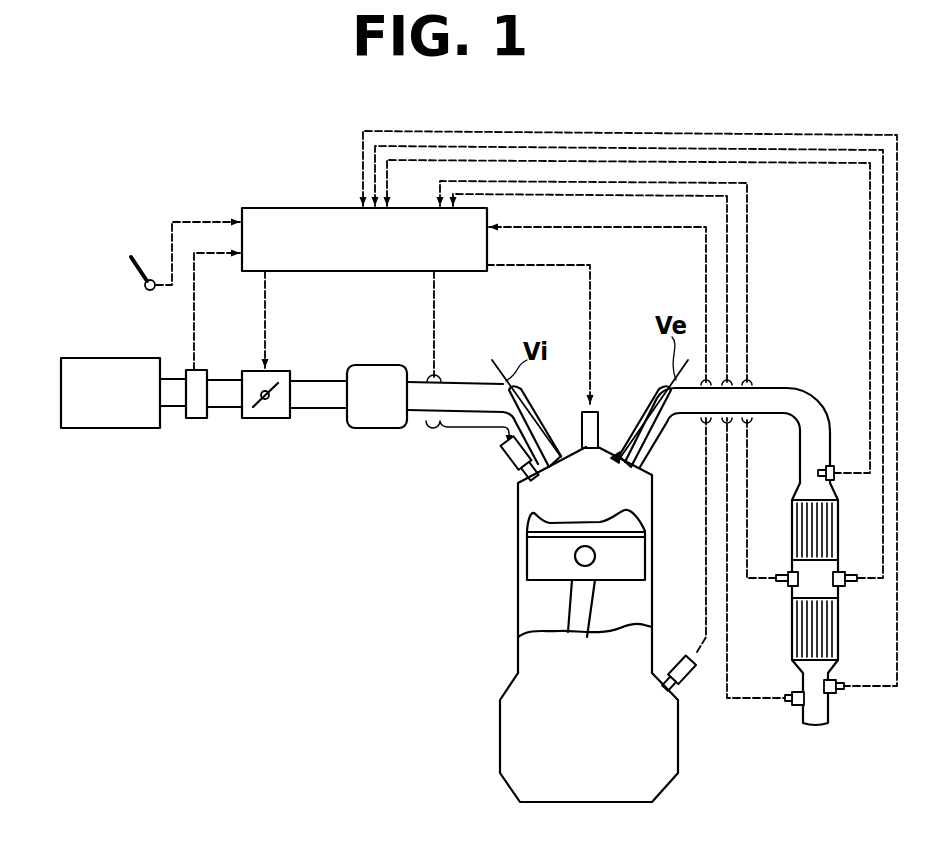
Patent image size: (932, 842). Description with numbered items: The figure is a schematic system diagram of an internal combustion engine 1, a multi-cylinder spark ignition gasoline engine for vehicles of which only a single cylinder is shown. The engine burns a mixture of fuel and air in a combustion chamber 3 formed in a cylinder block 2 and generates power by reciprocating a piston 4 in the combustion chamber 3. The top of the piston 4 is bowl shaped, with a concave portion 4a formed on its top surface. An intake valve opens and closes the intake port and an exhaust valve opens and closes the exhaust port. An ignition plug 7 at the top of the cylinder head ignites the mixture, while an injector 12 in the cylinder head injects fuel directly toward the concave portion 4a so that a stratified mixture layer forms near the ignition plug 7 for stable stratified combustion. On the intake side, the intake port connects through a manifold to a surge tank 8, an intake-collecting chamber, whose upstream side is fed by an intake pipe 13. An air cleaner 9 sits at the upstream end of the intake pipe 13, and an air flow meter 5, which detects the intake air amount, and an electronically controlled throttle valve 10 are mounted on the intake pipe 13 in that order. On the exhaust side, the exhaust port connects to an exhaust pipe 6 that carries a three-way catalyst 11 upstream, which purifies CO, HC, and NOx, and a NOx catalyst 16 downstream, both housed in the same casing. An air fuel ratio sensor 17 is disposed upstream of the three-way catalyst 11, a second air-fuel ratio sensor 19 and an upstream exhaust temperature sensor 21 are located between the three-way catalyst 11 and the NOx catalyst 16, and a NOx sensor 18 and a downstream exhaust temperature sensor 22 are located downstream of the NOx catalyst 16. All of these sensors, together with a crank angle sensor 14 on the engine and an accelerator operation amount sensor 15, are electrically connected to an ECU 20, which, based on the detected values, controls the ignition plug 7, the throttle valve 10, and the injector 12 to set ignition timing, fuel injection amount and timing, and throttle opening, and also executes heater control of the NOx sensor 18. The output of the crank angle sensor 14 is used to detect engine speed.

The internal combustion engine 1 is at (351, 572).
The cylinder block 2 is at (535, 653).
The combustion chamber 3 is at (600, 506).
The piston 4 is at (533, 553).
The concave portion 4a is at (530, 514).
The air flow meter 5 is at (196, 418).
The exhaust pipe 6 is at (818, 404).
The ignition plug 7 is at (583, 428).
The surge tank 8 is at (377, 428).
The air cleaner 9 is at (110, 428).
The throttle valve 10 is at (265, 418).
The three-way catalyst 11 is at (838, 530).
The injector 12 is at (505, 455).
The intake pipe 13 is at (316, 412).
The crank angle sensor 14 is at (695, 672).
The accelerator operation amount sensor 15 is at (150, 290).
The NOx catalyst 16 is at (838, 637).
The air fuel ratio sensor 17 is at (835, 478).
The NOx sensor 18 is at (840, 692).
The second air-fuel ratio sensor 19 is at (850, 585).
The ECU 20 is at (320, 208).
The upstream exhaust temperature sensor 21 is at (786, 588).
The downstream exhaust temperature sensor 22 is at (796, 706).